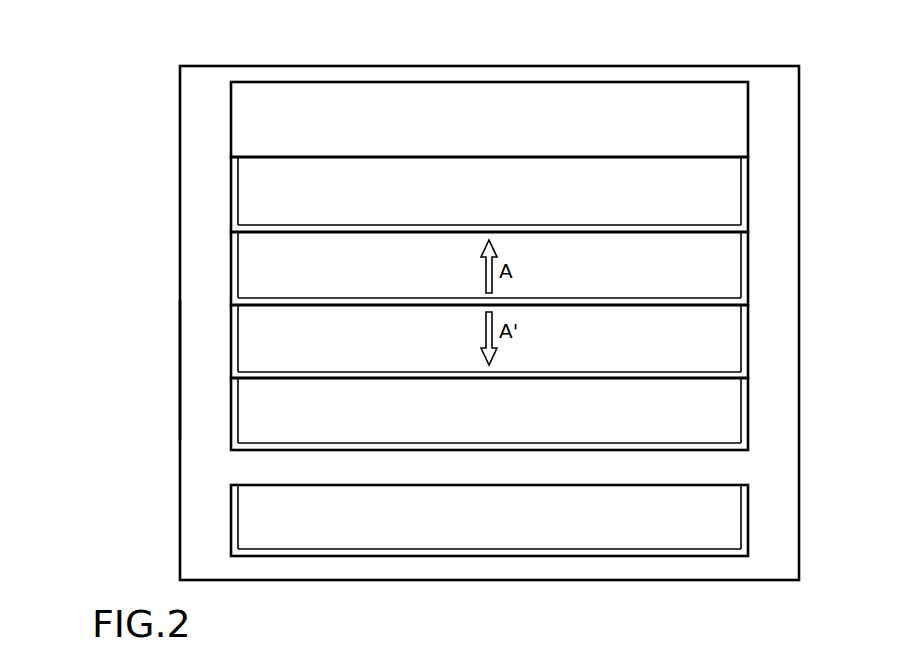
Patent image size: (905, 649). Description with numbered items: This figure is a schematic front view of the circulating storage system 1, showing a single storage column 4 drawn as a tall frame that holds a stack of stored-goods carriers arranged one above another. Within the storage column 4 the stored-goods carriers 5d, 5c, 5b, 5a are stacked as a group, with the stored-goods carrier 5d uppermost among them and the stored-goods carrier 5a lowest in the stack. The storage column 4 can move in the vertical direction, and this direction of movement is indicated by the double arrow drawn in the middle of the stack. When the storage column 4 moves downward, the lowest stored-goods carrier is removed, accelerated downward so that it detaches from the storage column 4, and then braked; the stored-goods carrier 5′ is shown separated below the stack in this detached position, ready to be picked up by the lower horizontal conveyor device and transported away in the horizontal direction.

The display device 1 is at (165, 59).
The storage column 4 is at (223, 353).
The stored-goods carrier 5d is at (737, 197).
The stored-goods carrier 5c is at (737, 274).
The stored-goods carrier 5b is at (737, 348).
The stored-goods carrier 5a is at (737, 420).
The stored-goods carrier 5′ is at (737, 524).